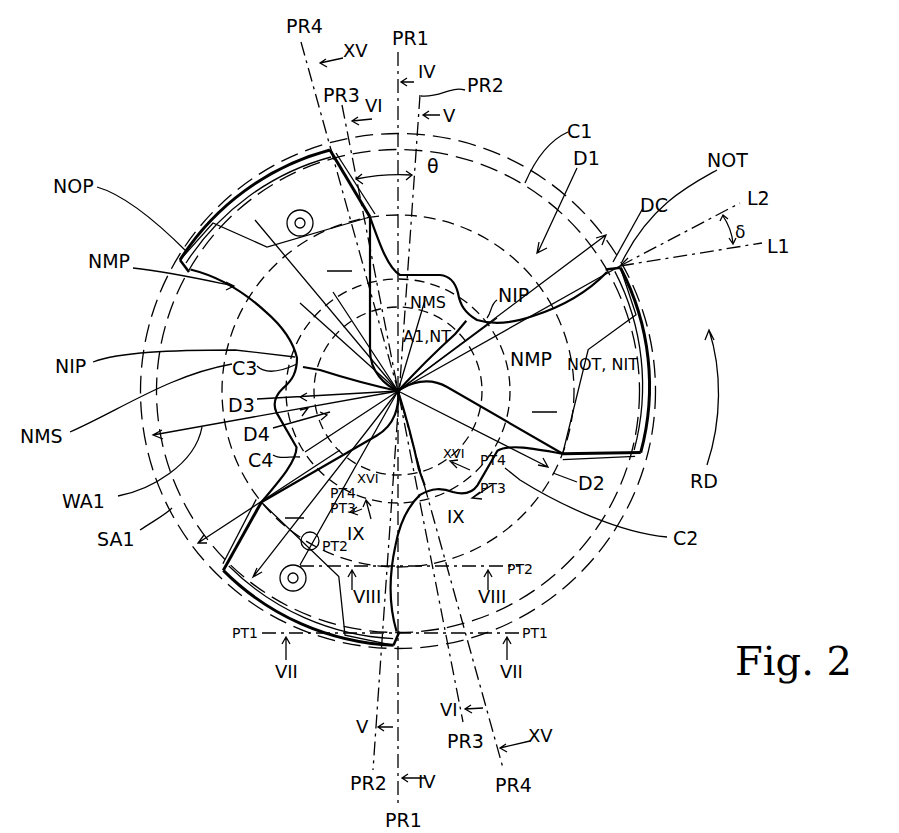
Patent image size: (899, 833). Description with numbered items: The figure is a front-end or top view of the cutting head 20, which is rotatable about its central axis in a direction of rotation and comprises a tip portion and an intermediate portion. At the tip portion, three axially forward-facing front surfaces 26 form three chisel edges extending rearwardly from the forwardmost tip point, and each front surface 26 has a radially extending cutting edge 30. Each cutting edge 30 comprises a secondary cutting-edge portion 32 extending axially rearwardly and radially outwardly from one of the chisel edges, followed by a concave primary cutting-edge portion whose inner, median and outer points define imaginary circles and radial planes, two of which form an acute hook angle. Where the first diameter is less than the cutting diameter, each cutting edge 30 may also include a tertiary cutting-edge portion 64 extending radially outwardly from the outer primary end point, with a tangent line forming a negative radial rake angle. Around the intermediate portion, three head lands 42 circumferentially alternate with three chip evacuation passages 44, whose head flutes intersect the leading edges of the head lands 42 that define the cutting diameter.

The cutting head 20 is at (623, 257).
The front surface 26 is at (445, 427).
The cutting edge 30 is at (195, 270).
The secondary cutting-edge portion 32 is at (268, 240).
The head land 42 is at (192, 223).
The chip evacuation passage 44 is at (470, 254).
The tertiary cutting-edge portion 64 is at (627, 260).